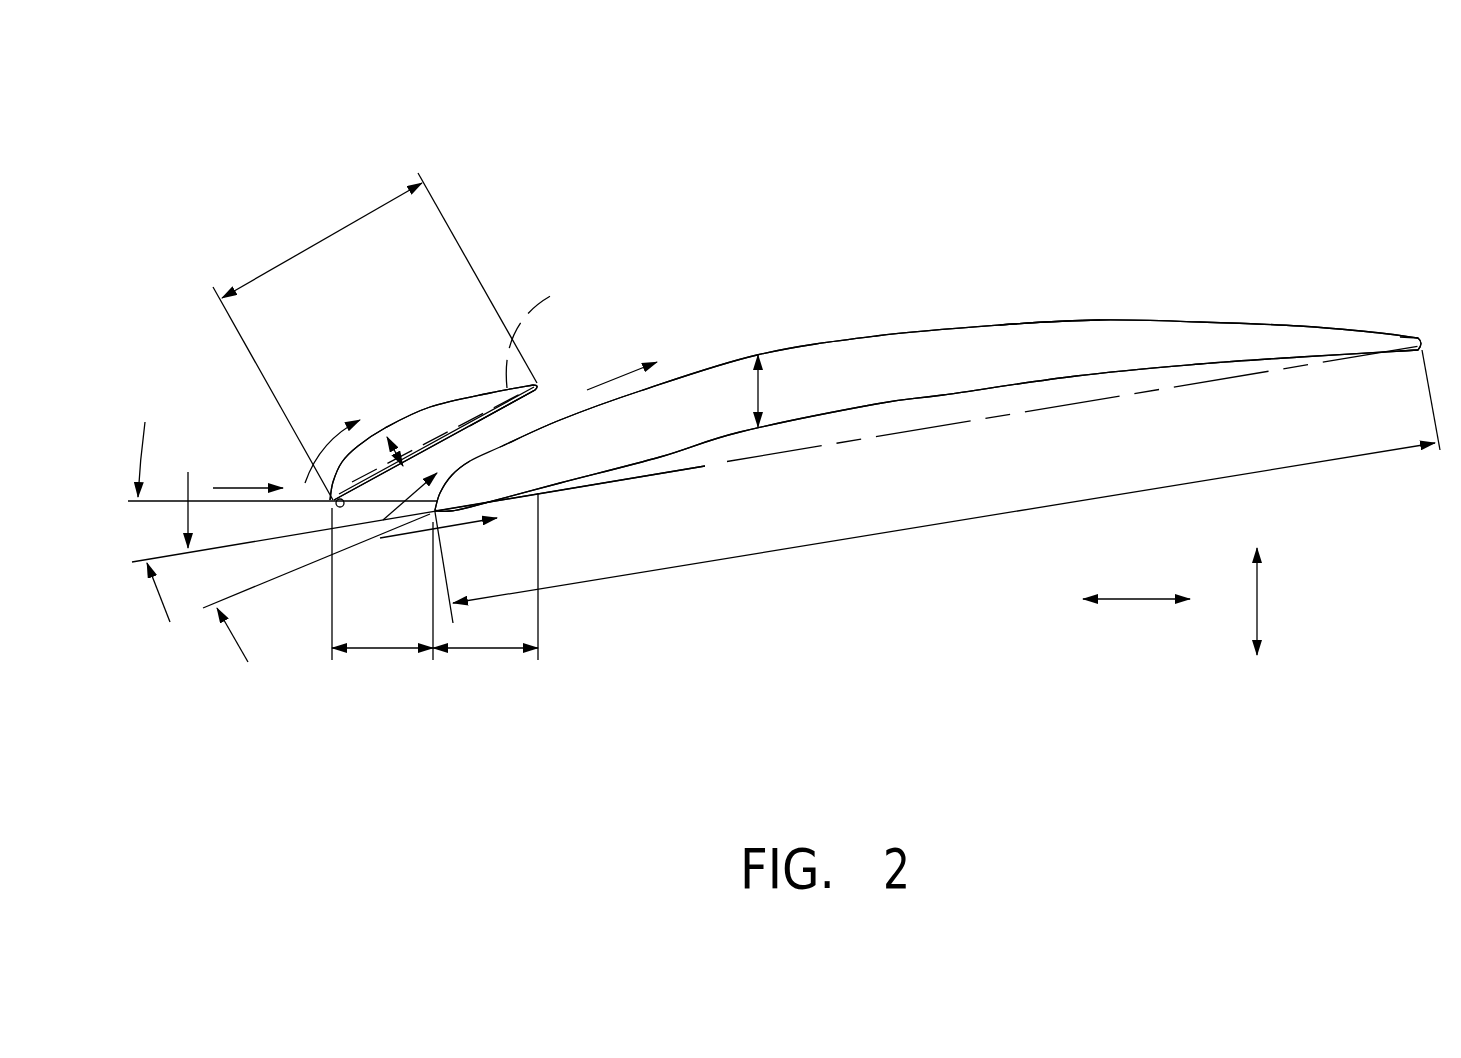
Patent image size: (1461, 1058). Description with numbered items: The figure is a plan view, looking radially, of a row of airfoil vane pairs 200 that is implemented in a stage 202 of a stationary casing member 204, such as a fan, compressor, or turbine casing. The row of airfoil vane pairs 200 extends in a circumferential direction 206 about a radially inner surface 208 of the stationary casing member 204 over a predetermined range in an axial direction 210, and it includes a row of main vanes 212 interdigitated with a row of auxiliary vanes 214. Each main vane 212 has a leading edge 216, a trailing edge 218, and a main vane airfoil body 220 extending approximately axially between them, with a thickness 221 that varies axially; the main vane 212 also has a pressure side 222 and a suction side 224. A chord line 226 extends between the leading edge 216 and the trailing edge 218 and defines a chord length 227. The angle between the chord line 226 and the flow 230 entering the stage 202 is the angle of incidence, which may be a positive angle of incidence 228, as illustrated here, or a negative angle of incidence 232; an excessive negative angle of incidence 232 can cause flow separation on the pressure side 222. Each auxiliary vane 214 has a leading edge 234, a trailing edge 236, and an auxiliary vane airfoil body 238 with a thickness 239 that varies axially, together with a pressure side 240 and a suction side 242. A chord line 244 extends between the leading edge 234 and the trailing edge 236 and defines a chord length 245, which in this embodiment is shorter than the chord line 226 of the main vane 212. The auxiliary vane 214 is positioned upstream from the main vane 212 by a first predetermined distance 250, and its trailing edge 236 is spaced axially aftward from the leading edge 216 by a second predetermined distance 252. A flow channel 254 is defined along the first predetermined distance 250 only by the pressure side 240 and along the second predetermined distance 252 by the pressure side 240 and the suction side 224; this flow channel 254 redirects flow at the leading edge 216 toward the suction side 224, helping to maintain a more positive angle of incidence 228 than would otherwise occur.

The row of airfoil vane pairs 200 is at (426, 302).
The stage 202 is at (1082, 123).
The stationary casing member 204 is at (1152, 474).
The circumferential direction 206 is at (1258, 600).
The radially inner surface 208 is at (942, 509).
The axial direction 210 is at (1135, 603).
The main vane 212 is at (555, 478).
The auxiliary vane 214 is at (362, 468).
The leading edge 216 is at (418, 525).
The trailing edge 218 is at (1425, 340).
The main vane airfoil body 220 is at (1137, 352).
The thickness 221 is at (764, 392).
The pressure side 222 is at (867, 410).
The suction side 224 is at (835, 335).
The chord line 226 is at (710, 466).
The chord length 227 is at (730, 562).
The positive angle of incidence 228 is at (157, 605).
The flow 230 is at (238, 488).
The negative angle of incidence 232 is at (240, 640).
The leading edge 234 is at (280, 493).
The trailing edge 236 is at (600, 372).
The auxiliary vane airfoil body 238 is at (458, 408).
The thickness 239 is at (408, 452).
The pressure side 240 is at (417, 458).
The suction side 242 is at (404, 430).
The chord line 244 is at (563, 331).
The chord length 245 is at (298, 250).
The first predetermined distance 250 is at (380, 650).
The second predetermined distance 252 is at (488, 650).
The flow channel 254 is at (565, 416).